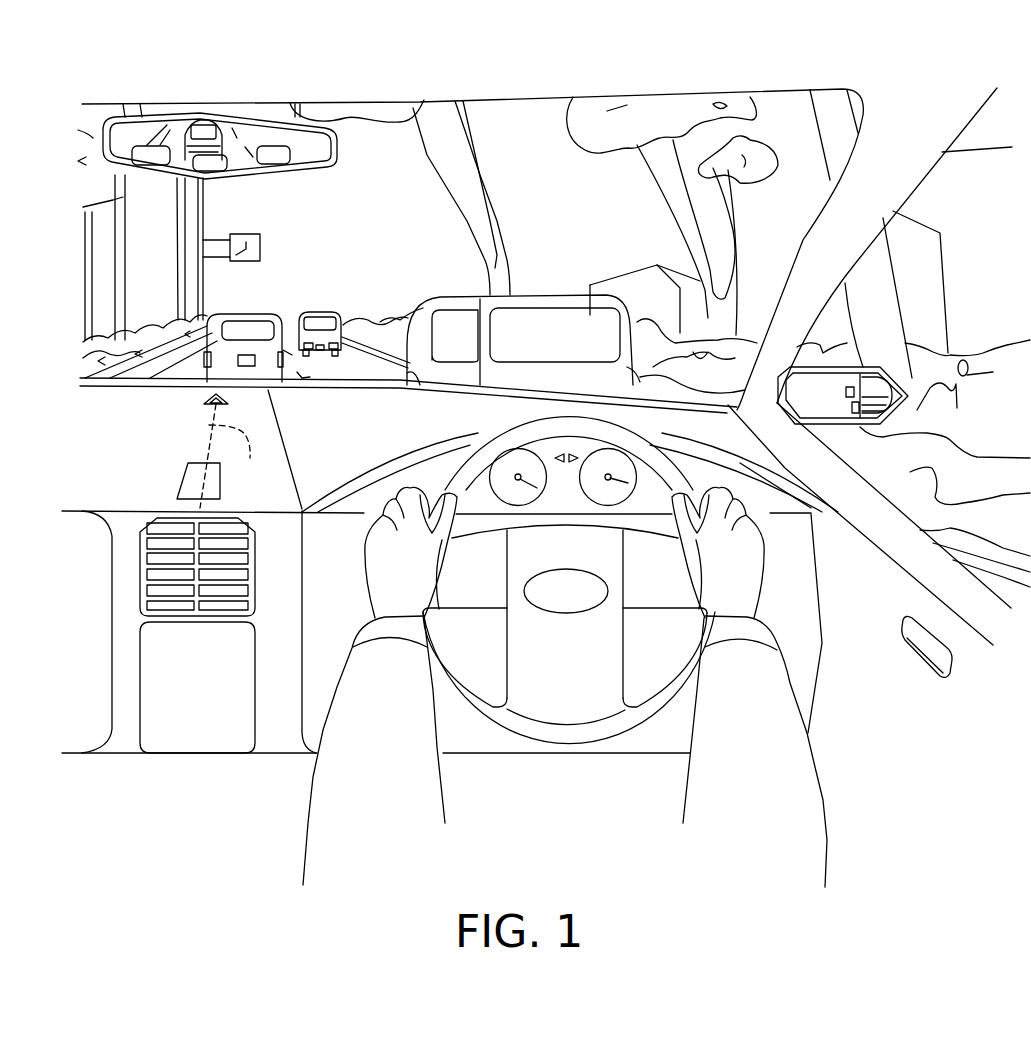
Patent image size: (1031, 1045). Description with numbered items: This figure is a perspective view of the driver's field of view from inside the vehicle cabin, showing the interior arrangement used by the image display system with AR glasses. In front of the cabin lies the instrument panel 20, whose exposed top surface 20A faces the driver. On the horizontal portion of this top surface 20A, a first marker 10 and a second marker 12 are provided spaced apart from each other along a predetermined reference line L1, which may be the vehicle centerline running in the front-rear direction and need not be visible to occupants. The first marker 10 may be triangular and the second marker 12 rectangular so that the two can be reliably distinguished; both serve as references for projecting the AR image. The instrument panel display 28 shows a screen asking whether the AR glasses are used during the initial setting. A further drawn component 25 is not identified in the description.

The first marker 10 is at (204, 400).
The second marker 12 is at (179, 481).
The instrument panel 20 is at (360, 400).
The top surface 20A is at (251, 402).
The front pillar 25 is at (833, 237).
The instrument panel display 28 is at (198, 715).
The reference line L1 is at (232, 456).